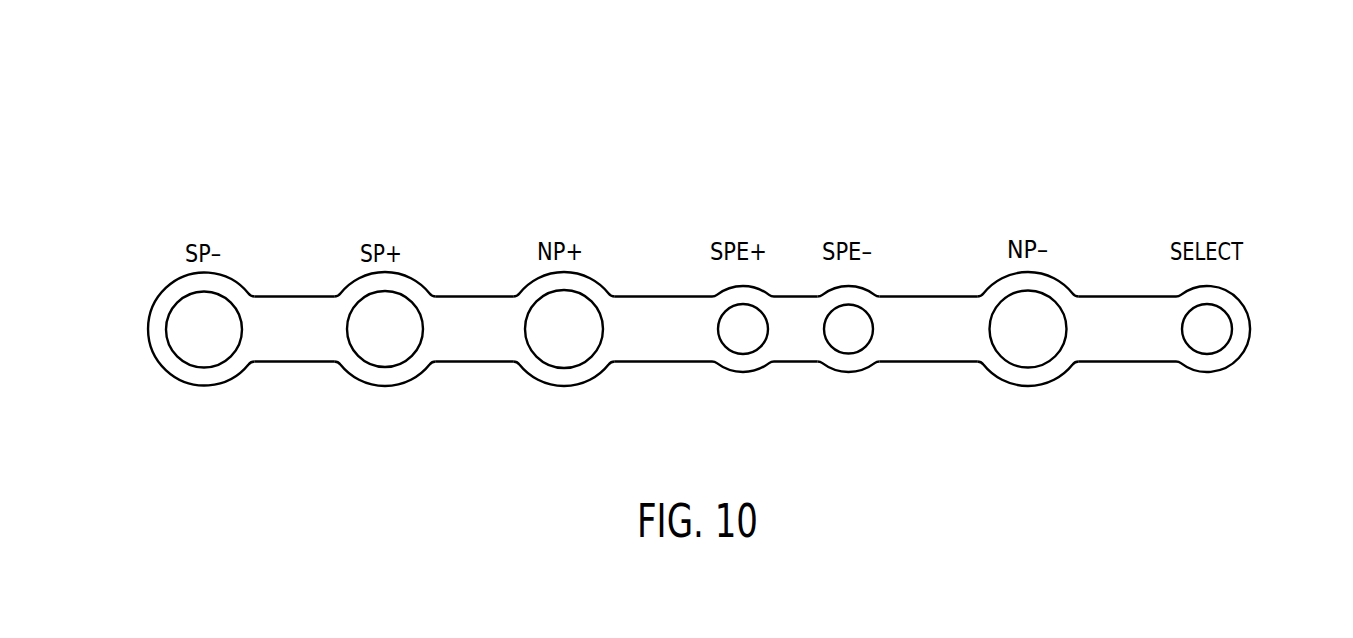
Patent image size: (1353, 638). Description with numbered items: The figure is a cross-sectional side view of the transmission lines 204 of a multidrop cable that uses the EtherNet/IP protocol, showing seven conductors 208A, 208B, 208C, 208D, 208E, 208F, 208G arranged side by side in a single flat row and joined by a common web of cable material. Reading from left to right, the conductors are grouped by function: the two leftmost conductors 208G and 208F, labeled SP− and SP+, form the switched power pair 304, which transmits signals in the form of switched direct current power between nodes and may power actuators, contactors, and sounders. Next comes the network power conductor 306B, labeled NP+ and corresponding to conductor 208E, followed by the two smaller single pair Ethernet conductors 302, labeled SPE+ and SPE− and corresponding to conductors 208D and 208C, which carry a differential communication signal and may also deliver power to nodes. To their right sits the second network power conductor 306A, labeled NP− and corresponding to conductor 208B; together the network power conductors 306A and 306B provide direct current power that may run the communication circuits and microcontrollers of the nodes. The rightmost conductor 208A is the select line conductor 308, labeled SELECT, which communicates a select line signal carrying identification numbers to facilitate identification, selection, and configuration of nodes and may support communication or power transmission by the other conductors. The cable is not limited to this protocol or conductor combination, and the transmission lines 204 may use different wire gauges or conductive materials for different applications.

The transmission lines 204 is at (470, 128).
The conductor 208A is at (1250, 327).
The conductor 208B is at (1057, 277).
The conductor 208C is at (865, 292).
The conductor 208D is at (730, 292).
The conductor 208E is at (540, 277).
The conductor 208F is at (360, 277).
The conductor 208G is at (180, 277).
The single pair Ethernet conductors 302 is at (877, 387).
The switched power pair 304 is at (438, 387).
The network power conductor 306A is at (1080, 387).
The network power conductor 306B is at (615, 387).
The select line conductor 308 is at (1257, 387).